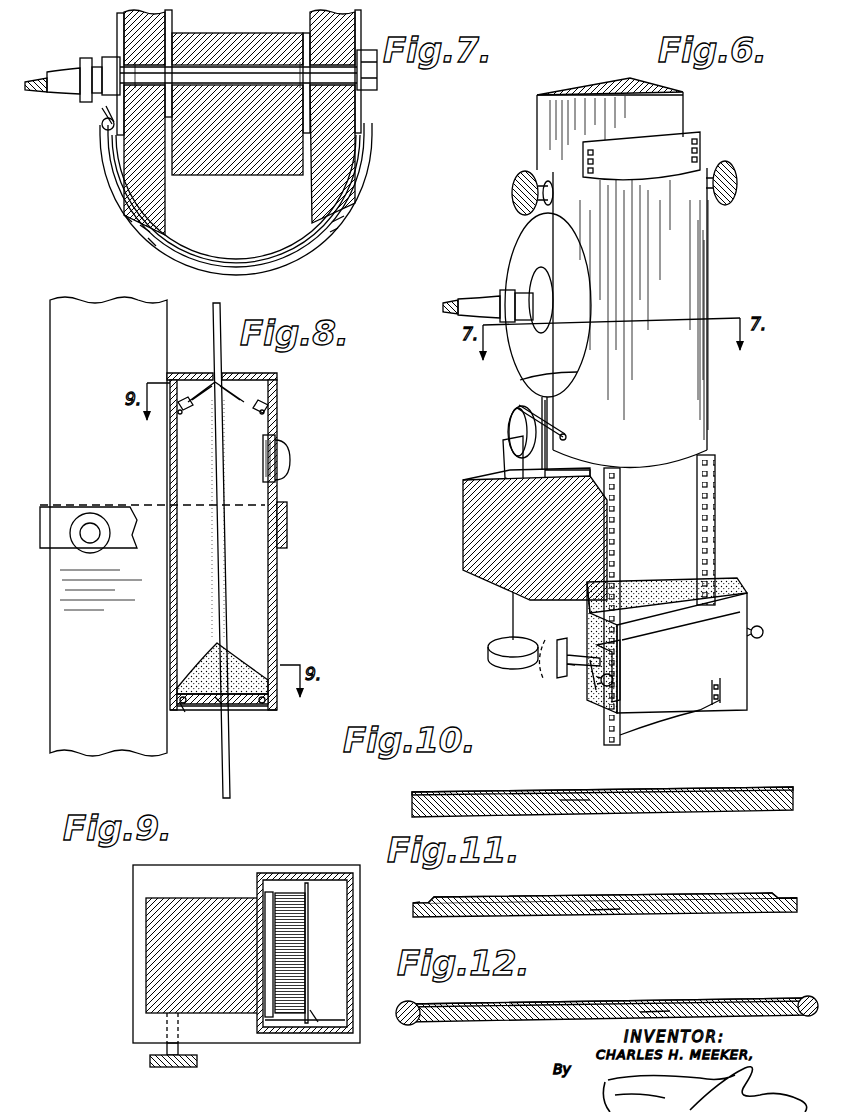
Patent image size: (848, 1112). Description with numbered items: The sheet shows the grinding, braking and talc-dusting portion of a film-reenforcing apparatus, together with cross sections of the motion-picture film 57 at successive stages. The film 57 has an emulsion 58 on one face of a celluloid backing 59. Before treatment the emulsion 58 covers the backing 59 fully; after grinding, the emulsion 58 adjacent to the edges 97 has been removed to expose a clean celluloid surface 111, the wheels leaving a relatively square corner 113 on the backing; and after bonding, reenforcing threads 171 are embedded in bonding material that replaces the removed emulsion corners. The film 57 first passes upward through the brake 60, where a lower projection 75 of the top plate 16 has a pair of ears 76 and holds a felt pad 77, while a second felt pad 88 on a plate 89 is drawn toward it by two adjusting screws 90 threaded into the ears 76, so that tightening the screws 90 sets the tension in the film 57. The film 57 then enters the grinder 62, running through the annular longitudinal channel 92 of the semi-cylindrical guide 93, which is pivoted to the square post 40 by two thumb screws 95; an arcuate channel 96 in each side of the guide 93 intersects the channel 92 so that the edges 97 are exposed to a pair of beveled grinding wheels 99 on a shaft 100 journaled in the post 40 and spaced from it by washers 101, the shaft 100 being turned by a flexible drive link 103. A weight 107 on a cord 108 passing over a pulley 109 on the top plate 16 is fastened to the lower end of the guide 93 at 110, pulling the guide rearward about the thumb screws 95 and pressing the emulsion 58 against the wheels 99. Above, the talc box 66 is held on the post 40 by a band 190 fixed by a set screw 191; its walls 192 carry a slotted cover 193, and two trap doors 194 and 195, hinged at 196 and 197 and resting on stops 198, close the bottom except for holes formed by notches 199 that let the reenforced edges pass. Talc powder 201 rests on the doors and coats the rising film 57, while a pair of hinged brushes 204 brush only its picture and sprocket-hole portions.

In FIG. 6, the top plate 16 is at (482, 550).
In FIG. 7, the square post 40 is at (277, 165).
In FIG. 6, the square post 40 is at (668, 118).
In FIG. 8, the square post 40 is at (154, 336).
In FIG. 9, the square post 40 is at (160, 997).
In FIG. 7, the motion-picture film 57 is at (182, 254).
In FIG. 6, the motion-picture film 57 is at (683, 563).
In FIG. 8, the motion-picture film 57 is at (224, 366).
In FIG. 10, the motion-picture film 57 is at (684, 800).
In FIG. 11, the motion-picture film 57 is at (710, 910).
In FIG. 12, the motion-picture film 57 is at (515, 1010).
In FIG. 10, the emulsion 58 is at (641, 789).
In FIG. 11, the emulsion 58 is at (660, 897).
In FIG. 12, the emulsion 58 is at (599, 1004).
In FIG. 10, the celluloid backing 59 is at (585, 802).
In FIG. 11, the celluloid backing 59 is at (606, 910).
In FIG. 12, the celluloid backing 59 is at (666, 1010).
In FIG. 6, the brake 60 is at (715, 615).
In FIG. 7, the grinder 62 is at (153, 212).
In FIG. 6, the grinder 62 is at (668, 369).
In FIG. 8, the talc box 66 is at (248, 603).
In FIG. 6, the lower projection 75 is at (560, 664).
In FIG. 6, the ears 76 is at (582, 670).
In FIG. 6, the felt pad 77 is at (596, 682).
In FIG. 6, the felt pad 88 is at (600, 659).
In FIG. 6, the plate 89 is at (722, 664).
In FIG. 6, the adjusting screws 90 is at (766, 635).
In FIG. 7, the annular longitudinal channel 92 is at (258, 266).
In FIG. 6, the annular longitudinal channel 92 is at (577, 158).
In FIG. 7, the semi-cylindrical guide 93 is at (359, 184).
In FIG. 6, the semi-cylindrical guide 93 is at (677, 410).
In FIG. 6, the thumb screws 95 is at (511, 196).
In FIG. 7, the arcuate channel 96 is at (148, 240).
In FIG. 6, the arcuate channel 96 is at (560, 376).
In FIG. 7, the edges 97 is at (142, 227).
In FIG. 6, the edges 97 is at (705, 306).
In FIG. 7, the beveled grinding wheels 99 is at (136, 150).
In FIG. 6, the beveled grinding wheels 99 is at (518, 256).
In FIG. 7, the shaft 100 is at (326, 72).
In FIG. 7, the washers 101 is at (174, 62).
In FIG. 7, the flexible drive link 103 is at (48, 80).
In FIG. 6, the flexible drive link 103 is at (453, 306).
In FIG. 6, the weight 107 is at (490, 650).
In FIG. 7, the cord 108 is at (100, 114).
In FIG. 6, the cord 108 is at (545, 423).
In FIG. 6, the pulley 109 is at (510, 431).
In FIG. 7, the cord attachment 110 is at (104, 128).
In FIG. 6, the cord attachment 110 is at (567, 436).
In FIG. 11, the exposed celluloid surface 111 is at (418, 903).
In FIG. 11, the square corner 113 is at (797, 896).
In FIG. 12, the reenforcing threads 171 is at (808, 1002).
In FIG. 8, the band 190 is at (104, 515).
In FIG. 9, the band 190 is at (248, 876).
In FIG. 8, the set screw 191 is at (101, 538).
In FIG. 9, the set screw 191 is at (178, 1068).
In FIG. 8, the walls 192 is at (280, 496).
In FIG. 9, the walls 192 is at (320, 874).
In FIG. 8, the slotted cover 193 is at (272, 376).
In FIG. 8, the trap door 194 is at (218, 702).
In FIG. 8, the trap door 195 is at (253, 709).
In FIG. 9, the trap door 195 is at (340, 1042).
In FIG. 8, the hinge 196 is at (179, 701).
In FIG. 8, the hinge 197 is at (267, 700).
In FIG. 9, the hinge 197 is at (340, 1000).
In FIG. 8, the stops 198 is at (184, 712).
In FIG. 9, the notch 199 is at (306, 890).
In FIG. 8, the talc powder 201 is at (190, 678).
In FIG. 8, the brushes 204 is at (266, 410).
In FIG. 9, the brushes 204 is at (280, 947).